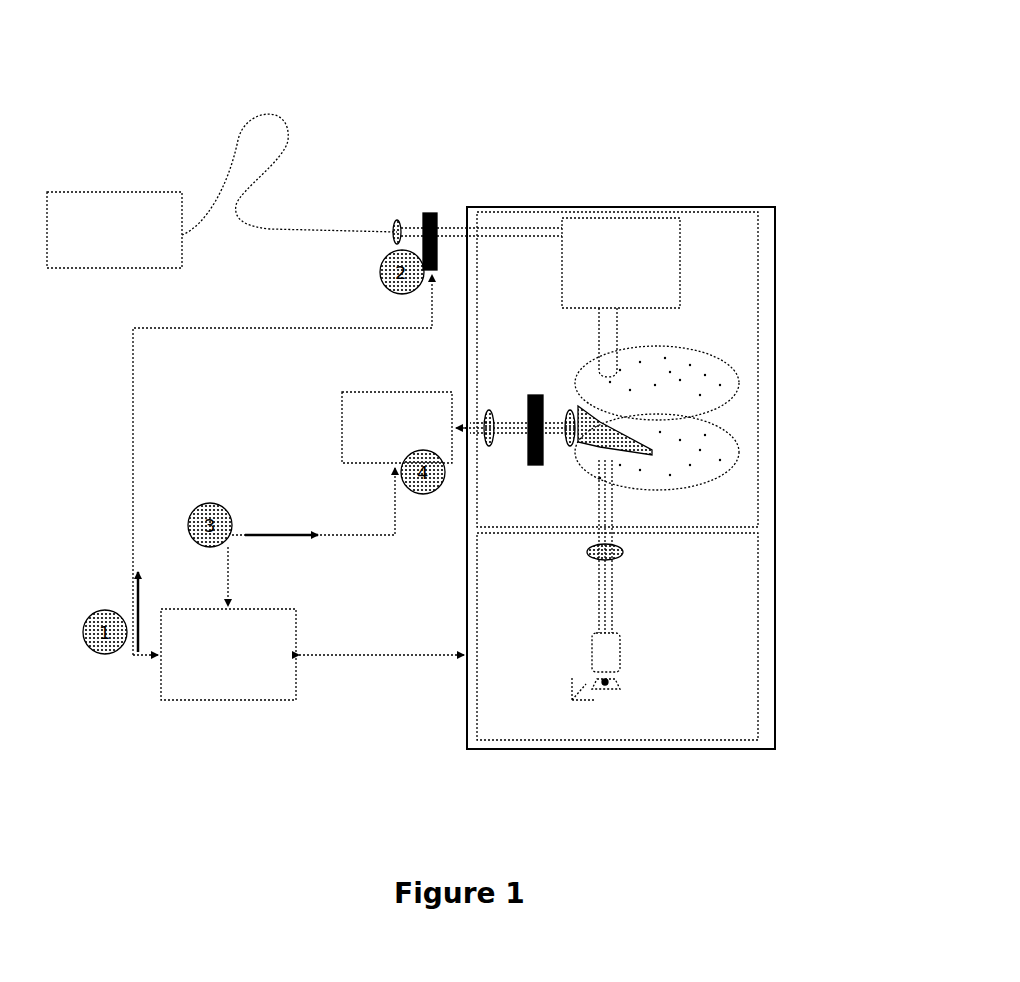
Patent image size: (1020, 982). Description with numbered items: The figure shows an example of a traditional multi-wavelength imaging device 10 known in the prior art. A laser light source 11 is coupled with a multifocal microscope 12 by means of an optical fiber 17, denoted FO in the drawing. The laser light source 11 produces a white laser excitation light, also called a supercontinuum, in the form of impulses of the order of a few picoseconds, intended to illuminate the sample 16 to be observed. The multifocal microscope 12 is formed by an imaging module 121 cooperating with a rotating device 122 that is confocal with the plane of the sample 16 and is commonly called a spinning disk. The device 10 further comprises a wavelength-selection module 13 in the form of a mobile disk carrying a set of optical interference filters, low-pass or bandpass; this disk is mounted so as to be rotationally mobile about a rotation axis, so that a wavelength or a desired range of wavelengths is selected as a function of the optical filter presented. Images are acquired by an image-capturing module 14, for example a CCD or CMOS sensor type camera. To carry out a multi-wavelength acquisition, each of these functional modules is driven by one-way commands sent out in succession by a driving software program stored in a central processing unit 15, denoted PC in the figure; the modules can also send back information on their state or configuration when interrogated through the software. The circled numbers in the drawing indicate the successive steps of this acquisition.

The multi-wavelength imaging device 10 is at (710, 62).
The laser light source 11 is at (110, 195).
The multifocal microscope 12 is at (777, 218).
The imaging module 121 is at (755, 648).
The rotating device 122 is at (757, 360).
The wavelength-selection module 13 is at (437, 213).
The image-capturing module 14 is at (343, 418).
The central processing unit 15 is at (170, 685).
The sample 16 is at (620, 686).
The optical fiber 17 is at (278, 158).